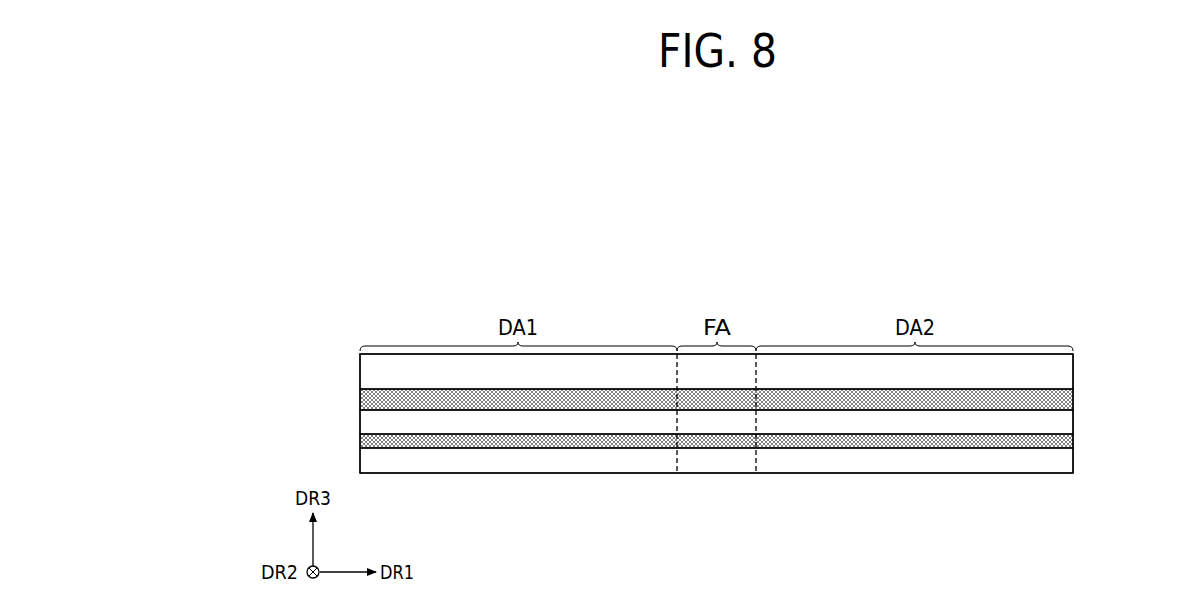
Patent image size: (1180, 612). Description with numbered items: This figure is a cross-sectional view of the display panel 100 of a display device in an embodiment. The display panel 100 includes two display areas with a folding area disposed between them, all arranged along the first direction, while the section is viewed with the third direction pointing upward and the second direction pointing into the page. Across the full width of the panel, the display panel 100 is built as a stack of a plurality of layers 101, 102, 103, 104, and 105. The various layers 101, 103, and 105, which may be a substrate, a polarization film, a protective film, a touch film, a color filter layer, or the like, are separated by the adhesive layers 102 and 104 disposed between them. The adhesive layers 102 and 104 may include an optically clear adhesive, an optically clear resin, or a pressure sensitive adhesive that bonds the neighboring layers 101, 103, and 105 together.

The display panel 100 is at (409, 280).
The layer 101 is at (1060, 460).
The adhesive layer 102 is at (1060, 443).
The layer 103 is at (1060, 422).
The adhesive layer 104 is at (1060, 402).
The layer 105 is at (1060, 373).